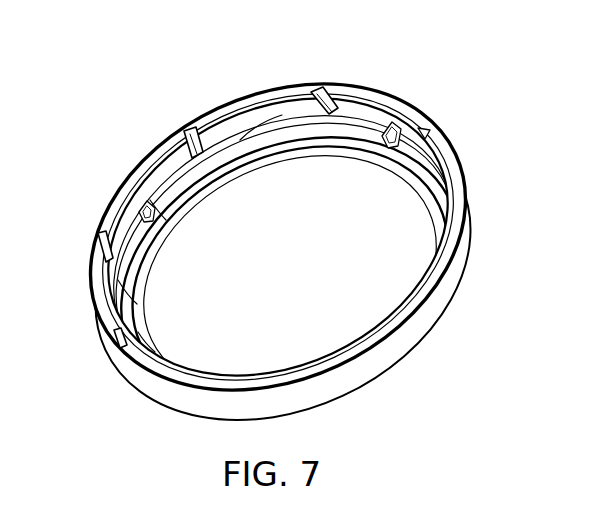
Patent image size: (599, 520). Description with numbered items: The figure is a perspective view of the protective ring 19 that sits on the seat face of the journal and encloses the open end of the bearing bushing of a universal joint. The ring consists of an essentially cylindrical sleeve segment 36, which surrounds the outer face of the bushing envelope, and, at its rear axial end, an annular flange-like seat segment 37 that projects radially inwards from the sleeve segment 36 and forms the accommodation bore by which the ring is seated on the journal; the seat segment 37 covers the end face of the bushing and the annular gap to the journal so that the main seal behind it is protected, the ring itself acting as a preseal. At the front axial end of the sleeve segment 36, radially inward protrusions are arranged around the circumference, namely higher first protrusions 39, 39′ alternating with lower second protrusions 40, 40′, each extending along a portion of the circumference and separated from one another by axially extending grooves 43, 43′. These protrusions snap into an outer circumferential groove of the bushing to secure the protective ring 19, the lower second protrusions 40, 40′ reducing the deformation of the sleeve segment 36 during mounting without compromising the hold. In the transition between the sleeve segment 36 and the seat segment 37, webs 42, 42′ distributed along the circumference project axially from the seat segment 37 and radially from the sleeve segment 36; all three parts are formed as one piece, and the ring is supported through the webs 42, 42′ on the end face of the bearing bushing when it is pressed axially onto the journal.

The protective ring 19 is at (437, 133).
The sleeve segment 36 is at (447, 270).
The seat segment 37 is at (434, 217).
The first protrusion 39 is at (447, 182).
The first protrusion 39′ is at (263, 97).
The second protrusion 40 is at (332, 136).
The second protrusion 40′ is at (238, 200).
The web 42 is at (404, 102).
The web 42′ is at (134, 217).
The groove 43 is at (427, 123).
The groove 43′ is at (328, 88).